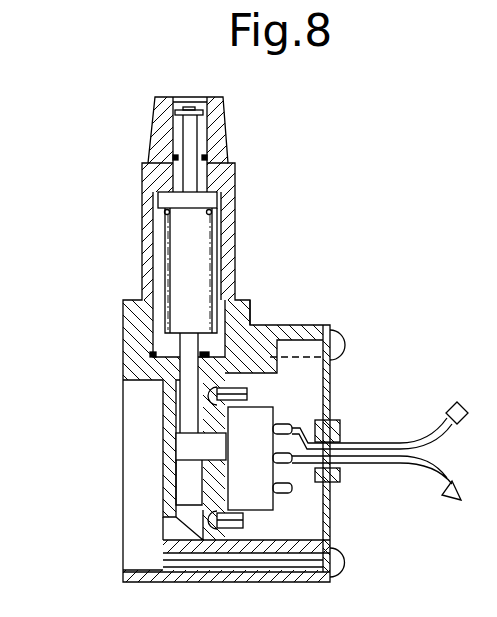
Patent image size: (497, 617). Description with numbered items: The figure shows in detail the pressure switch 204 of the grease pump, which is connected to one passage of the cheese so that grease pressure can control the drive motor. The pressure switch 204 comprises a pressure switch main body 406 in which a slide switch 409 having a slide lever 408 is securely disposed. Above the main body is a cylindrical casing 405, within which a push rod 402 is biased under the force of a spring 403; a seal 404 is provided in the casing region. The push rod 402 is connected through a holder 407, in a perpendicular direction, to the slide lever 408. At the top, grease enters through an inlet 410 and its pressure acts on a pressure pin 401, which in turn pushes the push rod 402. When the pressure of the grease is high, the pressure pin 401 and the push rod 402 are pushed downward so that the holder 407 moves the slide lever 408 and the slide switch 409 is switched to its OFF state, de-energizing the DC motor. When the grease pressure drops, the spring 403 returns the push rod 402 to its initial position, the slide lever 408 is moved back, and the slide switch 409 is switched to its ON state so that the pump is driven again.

The pressure switch 204 is at (247, 206).
The pressure pin 401 is at (190, 137).
The push rod 402 is at (188, 298).
The spring 403 is at (232, 222).
The seal 404 is at (173, 152).
The cylindrical casing 405 is at (153, 188).
The pressure switch main body 406 is at (125, 318).
The holder 407 is at (188, 470).
The slide lever 408 is at (193, 448).
The slide switch 409 is at (257, 463).
The inlet 410 is at (190, 92).